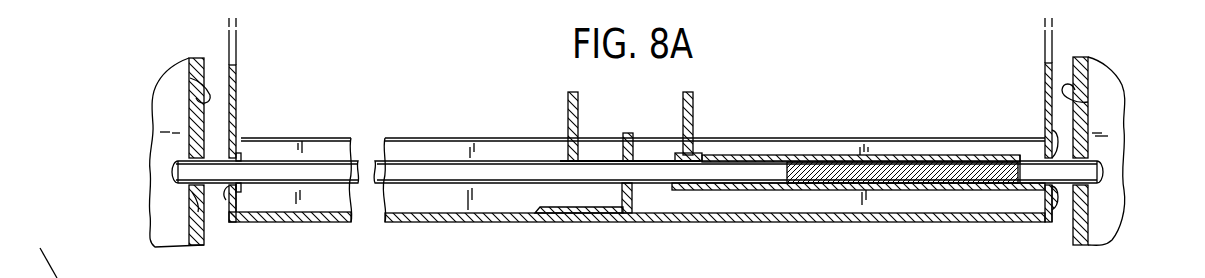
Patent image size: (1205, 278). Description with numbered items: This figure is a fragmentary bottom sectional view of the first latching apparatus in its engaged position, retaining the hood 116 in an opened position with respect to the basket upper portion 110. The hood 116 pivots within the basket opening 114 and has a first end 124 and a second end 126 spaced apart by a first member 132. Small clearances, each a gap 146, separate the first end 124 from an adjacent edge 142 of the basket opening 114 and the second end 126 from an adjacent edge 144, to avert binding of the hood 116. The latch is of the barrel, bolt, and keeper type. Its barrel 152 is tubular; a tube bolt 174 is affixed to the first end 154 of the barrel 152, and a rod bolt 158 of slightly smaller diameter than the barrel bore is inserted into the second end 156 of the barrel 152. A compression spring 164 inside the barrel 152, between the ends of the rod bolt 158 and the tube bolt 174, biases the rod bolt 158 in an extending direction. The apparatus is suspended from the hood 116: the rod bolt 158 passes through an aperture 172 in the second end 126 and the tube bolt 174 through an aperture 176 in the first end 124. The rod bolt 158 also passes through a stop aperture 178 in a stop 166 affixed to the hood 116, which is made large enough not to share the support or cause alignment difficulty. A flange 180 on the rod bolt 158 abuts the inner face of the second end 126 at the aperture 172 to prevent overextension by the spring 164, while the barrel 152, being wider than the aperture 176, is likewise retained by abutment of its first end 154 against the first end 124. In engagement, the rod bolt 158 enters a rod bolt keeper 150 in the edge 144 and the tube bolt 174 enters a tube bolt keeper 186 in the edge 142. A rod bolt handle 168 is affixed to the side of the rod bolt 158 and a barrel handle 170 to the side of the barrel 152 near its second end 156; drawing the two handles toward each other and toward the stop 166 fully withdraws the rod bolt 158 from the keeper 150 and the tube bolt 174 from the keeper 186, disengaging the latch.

The basket upper portion 110 is at (155, 118).
The basket opening 114 is at (714, 168).
The hood 116 is at (715, 222).
The first end 124 is at (1045, 82).
The second end 126 is at (233, 75).
The first member 132 is at (448, 210).
The edge 142 is at (1088, 102).
The edge 144 is at (190, 78).
The gap 146 is at (218, 68).
The rod bolt keeper 150 is at (192, 192).
The barrel 152 is at (857, 157).
The first end 154 is at (1053, 185).
The second end 156 is at (672, 187).
The rod bolt 158 is at (300, 157).
The compression spring 164 is at (928, 165).
The stop 166 is at (628, 135).
The rod bolt handle 168 is at (568, 127).
The barrel handle 170 is at (692, 92).
The aperture 172 is at (229, 186).
The tube bolt 174 is at (1052, 130).
The aperture 176 is at (1056, 190).
The stop aperture 178 is at (627, 155).
The flange 180 is at (240, 157).
The tube bolt keeper 186 is at (1088, 135).